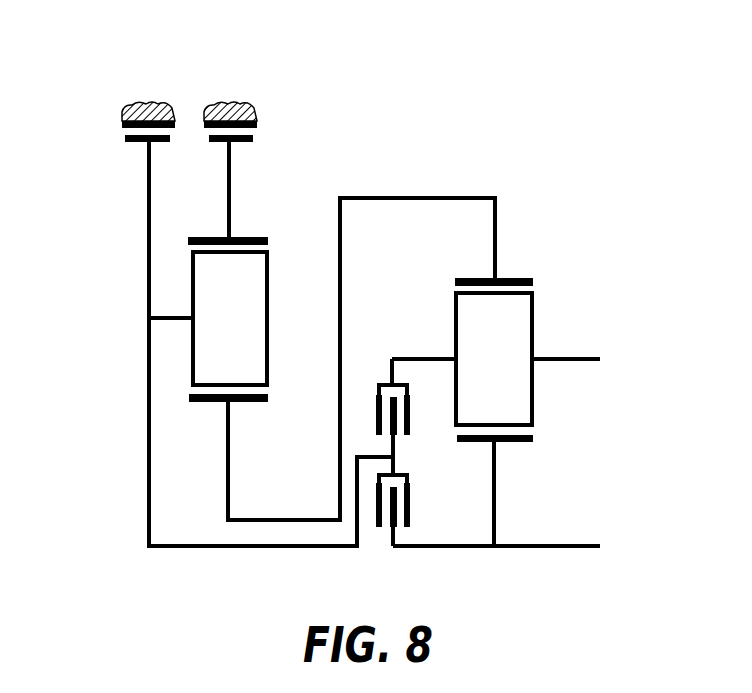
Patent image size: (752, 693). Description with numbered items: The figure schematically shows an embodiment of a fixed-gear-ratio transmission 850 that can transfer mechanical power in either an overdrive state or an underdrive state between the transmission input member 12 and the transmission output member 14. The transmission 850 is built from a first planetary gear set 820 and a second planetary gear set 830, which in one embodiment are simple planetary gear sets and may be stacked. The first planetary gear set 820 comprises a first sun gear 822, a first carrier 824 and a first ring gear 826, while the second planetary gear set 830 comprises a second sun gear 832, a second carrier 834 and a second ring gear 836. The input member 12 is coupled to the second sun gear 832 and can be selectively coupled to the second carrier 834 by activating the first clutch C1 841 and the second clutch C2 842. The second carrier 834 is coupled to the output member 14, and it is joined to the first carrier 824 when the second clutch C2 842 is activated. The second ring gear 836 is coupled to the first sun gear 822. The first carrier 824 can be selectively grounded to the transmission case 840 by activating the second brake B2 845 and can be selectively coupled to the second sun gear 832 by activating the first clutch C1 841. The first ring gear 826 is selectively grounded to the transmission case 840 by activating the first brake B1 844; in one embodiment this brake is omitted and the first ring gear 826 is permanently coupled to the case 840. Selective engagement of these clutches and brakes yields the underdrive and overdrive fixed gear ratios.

The fixed-gear-ratio transmission 850 is at (472, 133).
The transmission case 840 is at (230, 102).
The first brake B1 844 is at (252, 130).
The second brake B2 845 is at (137, 135).
The first planetary gear set 820 is at (245, 237).
The first ring gear 826 is at (203, 237).
The first carrier 824 is at (250, 333).
The first sun gear 822 is at (247, 402).
The second planetary gear set 830 is at (510, 278).
The second ring gear 836 is at (477, 278).
The second carrier 834 is at (515, 376).
The second sun gear 832 is at (510, 442).
The second clutch C2 842 is at (373, 415).
The first clutch C1 841 is at (410, 503).
The transmission output member 14 is at (632, 373).
The transmission input member 12 is at (632, 560).